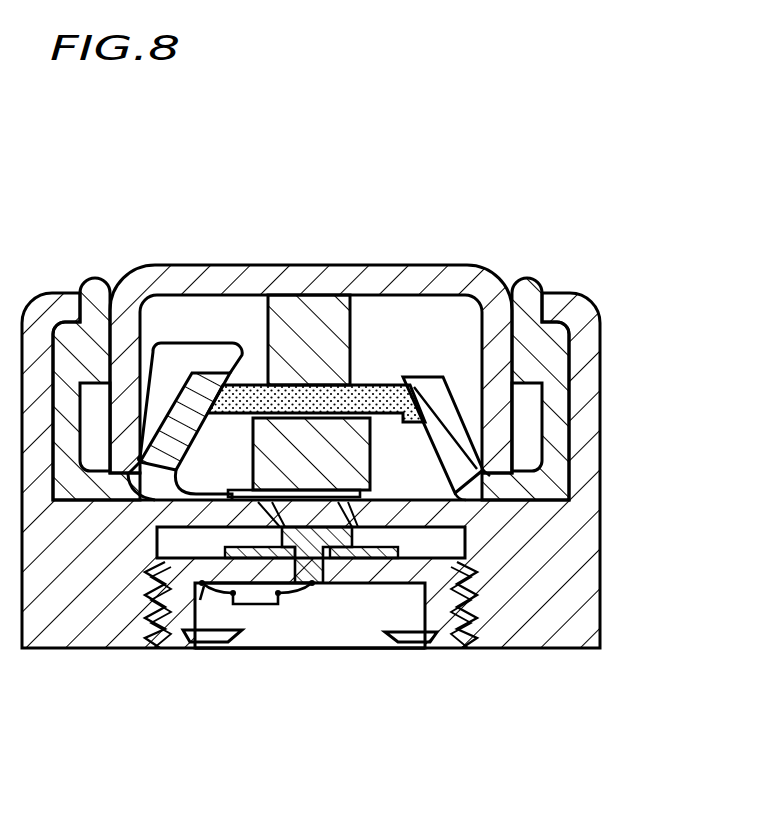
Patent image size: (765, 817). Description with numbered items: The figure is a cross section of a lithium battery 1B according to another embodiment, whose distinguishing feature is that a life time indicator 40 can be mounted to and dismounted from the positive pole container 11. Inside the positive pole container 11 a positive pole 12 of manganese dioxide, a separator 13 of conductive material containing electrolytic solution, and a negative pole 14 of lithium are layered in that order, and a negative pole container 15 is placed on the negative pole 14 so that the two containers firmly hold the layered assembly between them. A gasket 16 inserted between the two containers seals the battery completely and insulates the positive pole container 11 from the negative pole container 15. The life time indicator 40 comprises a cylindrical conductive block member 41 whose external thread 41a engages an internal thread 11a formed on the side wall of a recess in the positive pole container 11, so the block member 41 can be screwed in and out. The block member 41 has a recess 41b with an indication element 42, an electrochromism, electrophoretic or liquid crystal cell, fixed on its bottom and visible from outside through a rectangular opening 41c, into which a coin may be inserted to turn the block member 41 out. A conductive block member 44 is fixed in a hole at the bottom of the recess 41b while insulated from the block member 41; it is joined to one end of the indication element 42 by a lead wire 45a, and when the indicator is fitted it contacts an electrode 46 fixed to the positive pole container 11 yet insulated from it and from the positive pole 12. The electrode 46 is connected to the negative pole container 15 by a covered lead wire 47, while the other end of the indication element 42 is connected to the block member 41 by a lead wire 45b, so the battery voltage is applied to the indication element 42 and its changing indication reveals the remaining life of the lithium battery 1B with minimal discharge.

The lithium battery 1B is at (649, 161).
The positive pole container 11 is at (590, 531).
The internal thread 11a is at (456, 640).
The positive pole 12 is at (350, 451).
The separator 13 is at (372, 394).
The negative pole 14 is at (342, 333).
The negative pole container 15 is at (285, 280).
The gasket 16 is at (90, 291).
The life time indicator 40 is at (233, 693).
The conductive block member 41 is at (420, 648).
The external thread 41a is at (105, 716).
The recess 41b is at (410, 623).
The opening 41c is at (238, 656).
The indication element 42 is at (255, 602).
The conductive block member 44 is at (318, 578).
The lead wire 45a is at (292, 586).
The lead wire 45b is at (205, 587).
The electrode 46 is at (362, 495).
The covered lead wire 47 is at (158, 348).